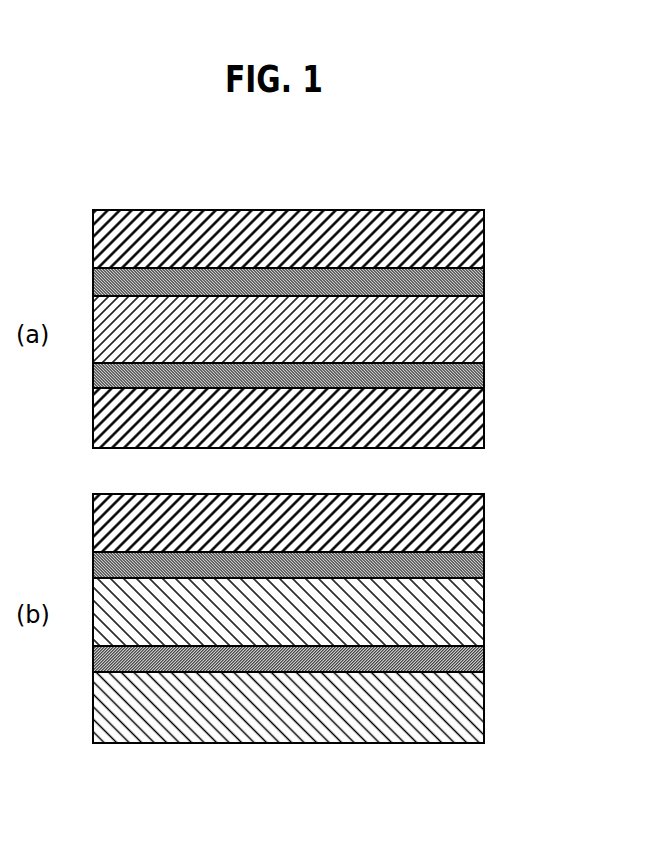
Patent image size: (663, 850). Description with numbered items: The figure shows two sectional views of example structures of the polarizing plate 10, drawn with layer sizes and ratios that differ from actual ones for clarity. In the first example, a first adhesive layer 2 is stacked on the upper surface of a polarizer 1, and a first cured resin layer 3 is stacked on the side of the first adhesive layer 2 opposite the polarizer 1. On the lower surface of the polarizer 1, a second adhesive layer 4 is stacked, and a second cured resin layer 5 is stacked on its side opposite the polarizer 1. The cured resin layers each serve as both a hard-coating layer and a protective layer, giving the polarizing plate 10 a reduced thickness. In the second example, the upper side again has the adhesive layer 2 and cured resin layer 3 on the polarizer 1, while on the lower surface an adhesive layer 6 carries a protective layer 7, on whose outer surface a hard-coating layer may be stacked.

The polarizing plate 10 is at (411, 184).
The polarizer 1 is at (465, 334).
The first adhesive layer 2 is at (465, 284).
The first cured resin layer 3 is at (465, 243).
The second adhesive layer 4 is at (465, 380).
The second cured resin layer 5 is at (465, 424).
The adhesive layer 6 is at (465, 663).
The protective layer 7 is at (465, 715).